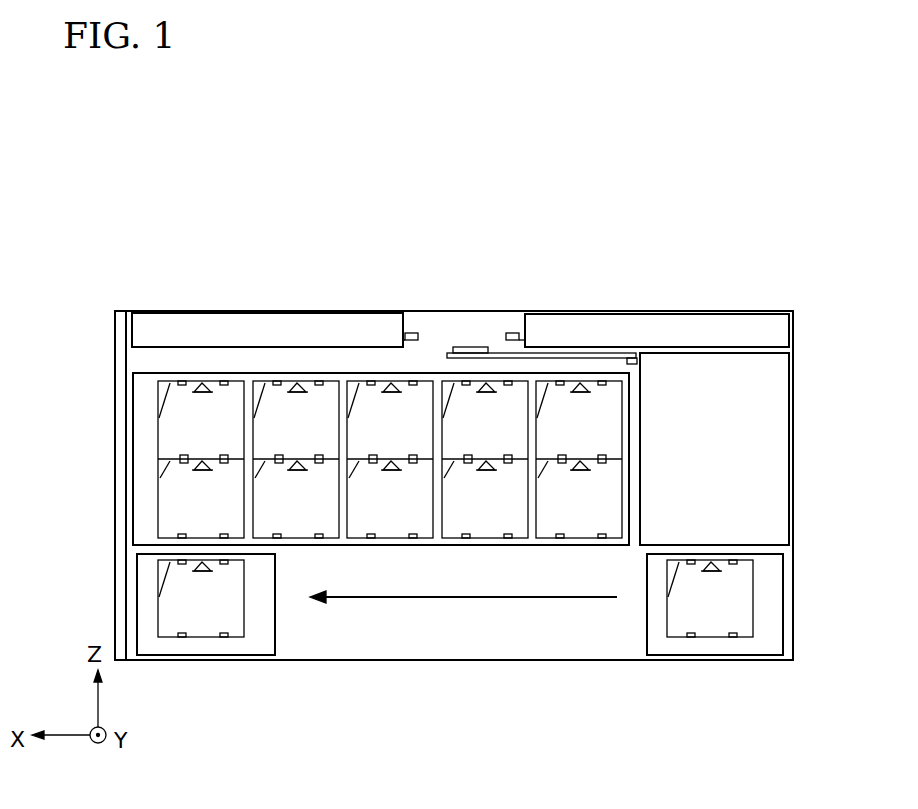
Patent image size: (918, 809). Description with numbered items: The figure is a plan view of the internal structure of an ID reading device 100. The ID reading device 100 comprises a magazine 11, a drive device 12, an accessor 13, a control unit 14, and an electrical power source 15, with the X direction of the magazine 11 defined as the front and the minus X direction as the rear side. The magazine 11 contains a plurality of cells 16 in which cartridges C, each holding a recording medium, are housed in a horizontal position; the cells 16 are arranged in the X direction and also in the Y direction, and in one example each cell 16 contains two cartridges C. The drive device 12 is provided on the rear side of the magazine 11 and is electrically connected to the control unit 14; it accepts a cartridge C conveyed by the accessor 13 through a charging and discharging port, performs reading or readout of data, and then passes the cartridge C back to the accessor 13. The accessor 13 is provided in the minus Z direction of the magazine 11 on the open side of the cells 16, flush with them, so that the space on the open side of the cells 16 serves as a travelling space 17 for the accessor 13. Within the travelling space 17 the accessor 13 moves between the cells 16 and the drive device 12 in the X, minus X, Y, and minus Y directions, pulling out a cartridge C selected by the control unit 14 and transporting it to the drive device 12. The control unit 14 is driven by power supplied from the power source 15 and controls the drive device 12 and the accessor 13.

The ID reading device 100 is at (688, 135).
The magazine 11 is at (143, 372).
The drive device 12 is at (742, 368).
The accessor 13 is at (648, 653).
The control unit 14 is at (282, 323).
The power source 15 is at (682, 328).
The cell 16 is at (381, 458).
The travelling space 17 is at (462, 655).
The cartridge C is at (512, 407).